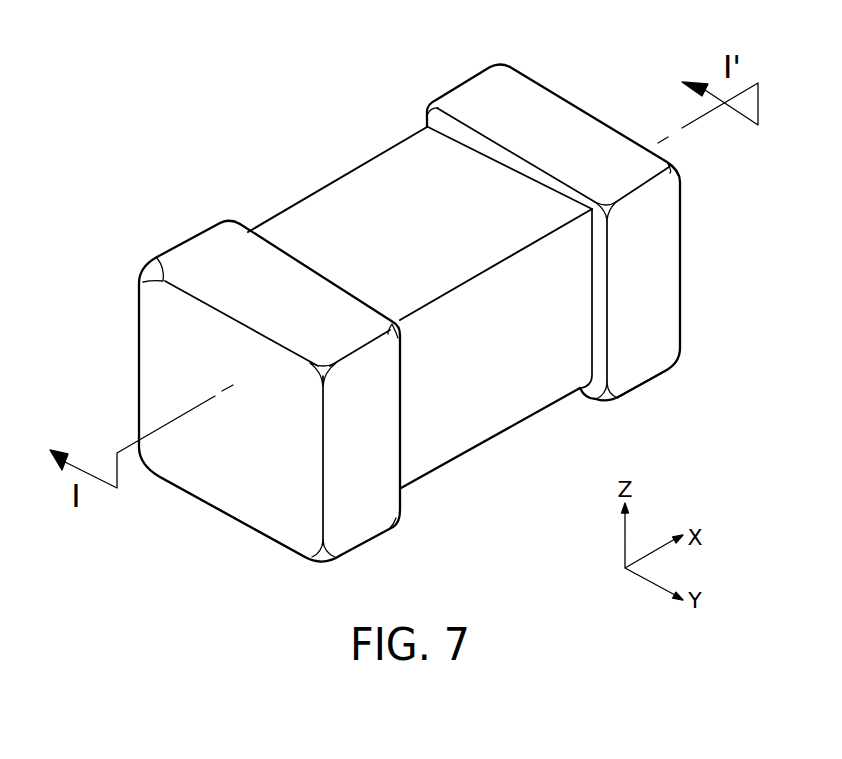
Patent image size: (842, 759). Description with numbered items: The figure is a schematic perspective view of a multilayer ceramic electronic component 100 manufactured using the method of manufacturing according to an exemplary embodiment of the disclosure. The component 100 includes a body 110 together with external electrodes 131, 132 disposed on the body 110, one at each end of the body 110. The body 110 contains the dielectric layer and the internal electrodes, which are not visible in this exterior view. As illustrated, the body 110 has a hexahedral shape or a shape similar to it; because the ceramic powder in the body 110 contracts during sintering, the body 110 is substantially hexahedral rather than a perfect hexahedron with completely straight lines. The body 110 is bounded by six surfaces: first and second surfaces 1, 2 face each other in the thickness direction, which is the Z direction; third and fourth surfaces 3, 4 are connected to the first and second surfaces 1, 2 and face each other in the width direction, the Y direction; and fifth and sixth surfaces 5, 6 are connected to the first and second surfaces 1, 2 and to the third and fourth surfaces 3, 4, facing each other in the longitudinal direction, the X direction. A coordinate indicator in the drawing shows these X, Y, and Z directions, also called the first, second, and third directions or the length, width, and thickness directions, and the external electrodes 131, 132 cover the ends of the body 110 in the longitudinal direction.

The multilayer ceramic electronic component 100 is at (200, 73).
The body 110 is at (306, 228).
The external electrode 131 is at (200, 258).
The external electrode 132 is at (473, 100).
The first surface 1 is at (456, 408).
The second surface 2 is at (427, 187).
The third surface 3 is at (238, 452).
The fourth surface 4 is at (632, 248).
The fifth surface 5 is at (515, 372).
The sixth surface 6 is at (372, 211).